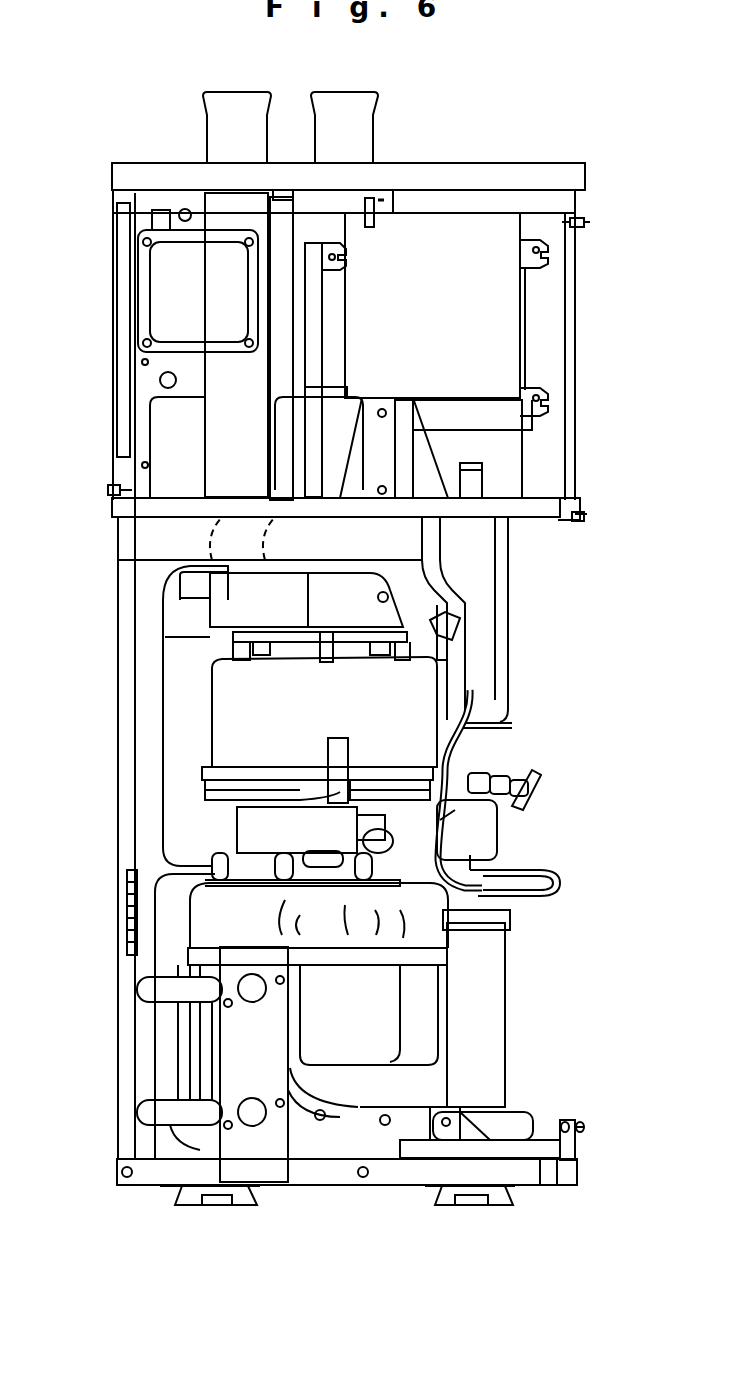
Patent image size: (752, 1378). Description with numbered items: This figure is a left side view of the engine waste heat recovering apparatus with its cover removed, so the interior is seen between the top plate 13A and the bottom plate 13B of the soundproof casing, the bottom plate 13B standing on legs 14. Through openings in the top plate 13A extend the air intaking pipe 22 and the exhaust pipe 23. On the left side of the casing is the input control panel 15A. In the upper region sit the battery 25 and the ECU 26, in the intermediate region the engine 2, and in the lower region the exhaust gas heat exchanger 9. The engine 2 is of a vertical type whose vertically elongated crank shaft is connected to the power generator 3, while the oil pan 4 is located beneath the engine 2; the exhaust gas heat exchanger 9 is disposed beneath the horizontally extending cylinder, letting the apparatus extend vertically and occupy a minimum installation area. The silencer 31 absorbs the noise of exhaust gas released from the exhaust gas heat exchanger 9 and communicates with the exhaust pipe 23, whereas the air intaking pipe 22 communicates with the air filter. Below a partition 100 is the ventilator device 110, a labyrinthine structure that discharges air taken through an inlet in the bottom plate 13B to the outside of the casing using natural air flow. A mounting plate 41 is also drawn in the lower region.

The top plate 13A is at (473, 175).
The bottom plate 13B is at (332, 1173).
The legs 14 is at (188, 1198).
The input control panel 15A is at (160, 299).
The air intaking pipe 22 is at (367, 103).
The exhaust pipe 23 is at (213, 103).
The battery 25 is at (512, 453).
The ECU 26 is at (498, 327).
The partition 100 is at (530, 510).
The ventilator device 110 is at (135, 533).
The silencer 31 is at (177, 663).
The power generator 3 is at (227, 717).
The engine 2 is at (265, 840).
The oil pan 4 is at (415, 1020).
The mounting plate 41 is at (233, 1068).
The exhaust gas heat exchanger 9 is at (487, 1083).